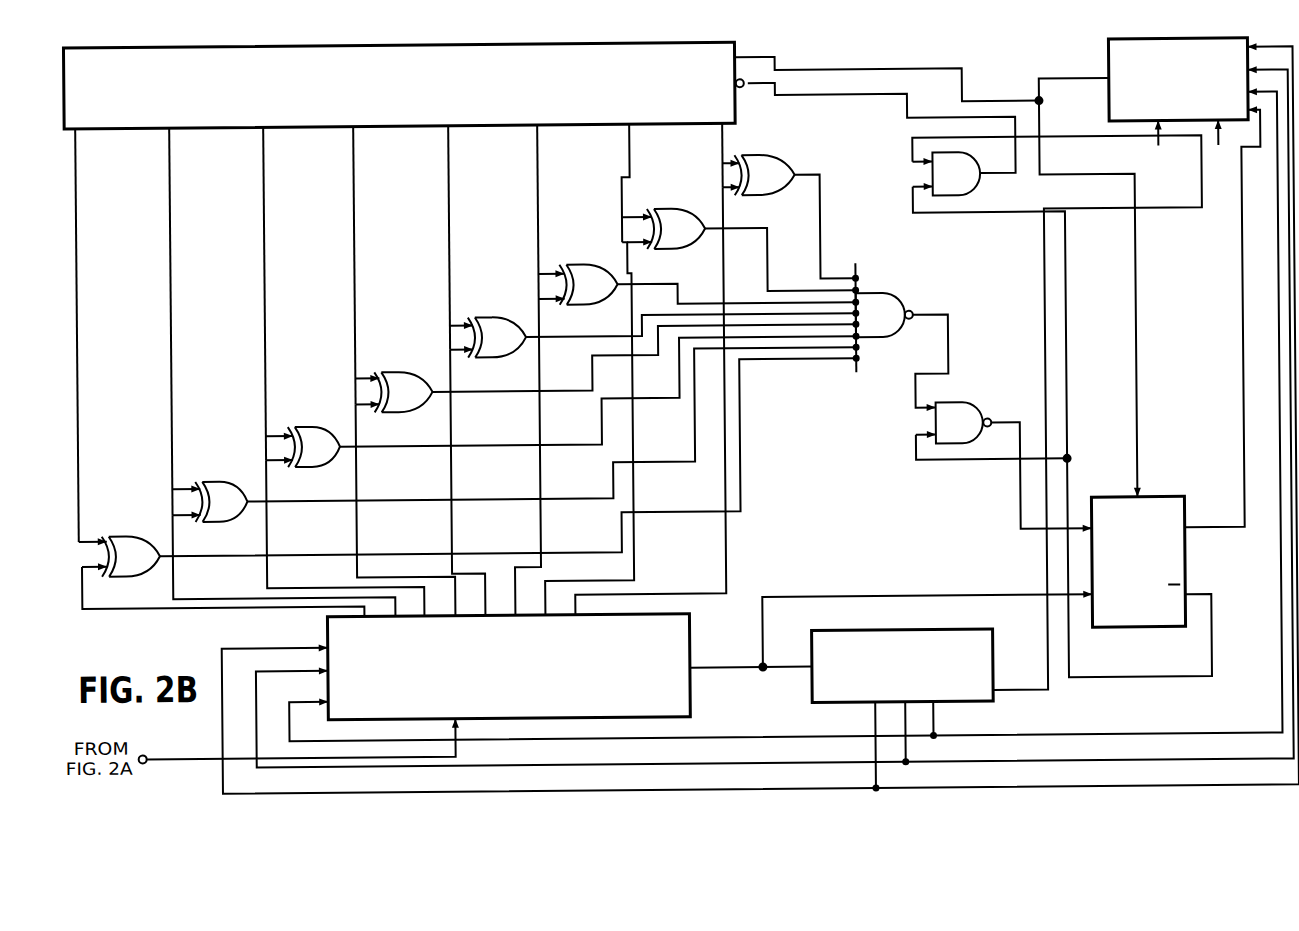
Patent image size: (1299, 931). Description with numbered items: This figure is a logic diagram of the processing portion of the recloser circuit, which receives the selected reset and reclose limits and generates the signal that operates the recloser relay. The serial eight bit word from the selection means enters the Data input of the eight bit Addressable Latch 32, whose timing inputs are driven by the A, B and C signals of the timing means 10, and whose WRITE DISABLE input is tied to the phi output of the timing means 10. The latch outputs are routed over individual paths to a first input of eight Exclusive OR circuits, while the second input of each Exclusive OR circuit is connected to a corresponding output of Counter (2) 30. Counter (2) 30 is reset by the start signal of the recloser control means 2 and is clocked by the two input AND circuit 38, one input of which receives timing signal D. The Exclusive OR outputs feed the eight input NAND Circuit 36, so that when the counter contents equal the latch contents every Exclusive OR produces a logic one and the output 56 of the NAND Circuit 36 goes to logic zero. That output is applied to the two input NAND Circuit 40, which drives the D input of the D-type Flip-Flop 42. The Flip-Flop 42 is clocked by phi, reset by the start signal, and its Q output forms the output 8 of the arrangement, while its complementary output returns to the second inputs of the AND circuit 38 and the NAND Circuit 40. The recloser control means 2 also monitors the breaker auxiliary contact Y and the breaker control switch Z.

The recloser control means 2 is at (1112, 52).
The output 8 is at (1228, 533).
The timing means 10 is at (810, 688).
The Counter (2) 30 is at (738, 44).
The Addressable Latch 32 is at (680, 614).
The eight input NAND Circuit 36 is at (912, 292).
The two input AND circuit 38 is at (966, 187).
The two input NAND Circuit 40 is at (969, 437).
The D-type Flip-Flop 42 is at (1164, 502).
The output 56 is at (927, 316).